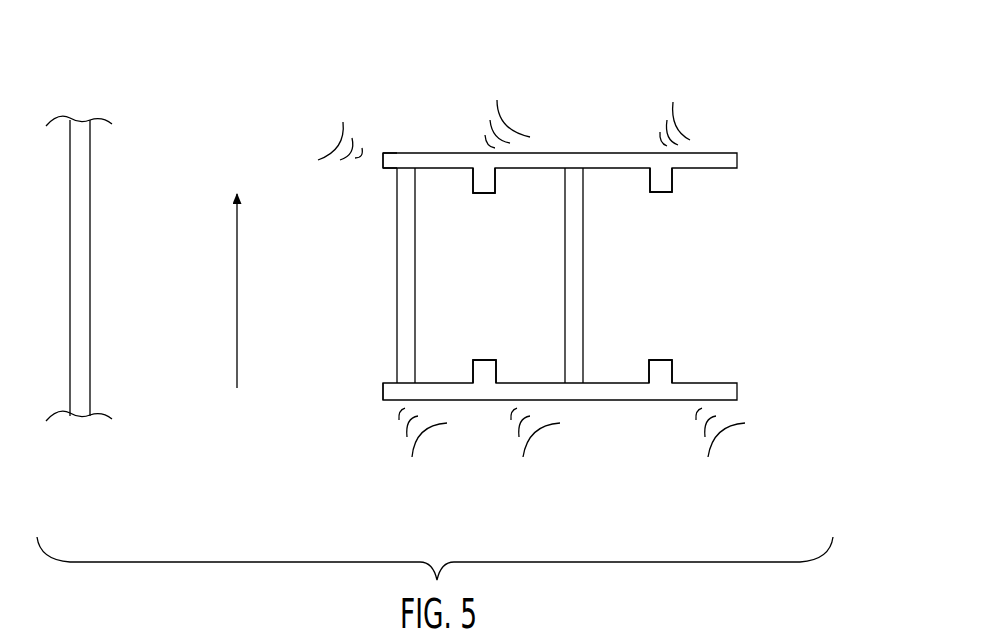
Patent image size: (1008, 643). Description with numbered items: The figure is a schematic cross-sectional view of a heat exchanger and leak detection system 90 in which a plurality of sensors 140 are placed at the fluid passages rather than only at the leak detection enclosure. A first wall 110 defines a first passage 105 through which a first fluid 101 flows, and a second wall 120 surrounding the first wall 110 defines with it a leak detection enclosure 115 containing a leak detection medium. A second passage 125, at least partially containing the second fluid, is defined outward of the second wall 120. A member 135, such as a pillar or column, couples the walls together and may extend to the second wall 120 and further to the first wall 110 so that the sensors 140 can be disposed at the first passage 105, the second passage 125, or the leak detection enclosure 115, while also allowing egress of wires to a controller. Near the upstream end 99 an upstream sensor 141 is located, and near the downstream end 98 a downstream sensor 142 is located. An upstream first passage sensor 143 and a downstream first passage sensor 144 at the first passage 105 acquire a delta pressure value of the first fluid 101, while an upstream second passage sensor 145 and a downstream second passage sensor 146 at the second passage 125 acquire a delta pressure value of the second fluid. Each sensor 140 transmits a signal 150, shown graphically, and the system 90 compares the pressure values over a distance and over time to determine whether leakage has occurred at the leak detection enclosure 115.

The heat exchanger and leak detection system 90 is at (752, 58).
The downstream end 98 is at (412, 105).
The upstream end 99 is at (409, 522).
The first fluid 101 is at (237, 330).
The first passage 105 is at (200, 287).
The first wall 110 is at (83, 333).
The leak detection enclosure 115 is at (500, 309).
The second wall 120 is at (577, 232).
The second passage 125 is at (705, 303).
The member 135 is at (613, 152).
The sensor 140 is at (390, 153).
The upstream sensor 141 is at (489, 356).
The downstream sensor 142 is at (483, 198).
The upstream first passage sensor 143 is at (381, 382).
The downstream first passage sensor 144 is at (391, 151).
The upstream second passage sensor 145 is at (659, 357).
The downstream second passage sensor 146 is at (674, 191).
The signal 150 is at (337, 143).